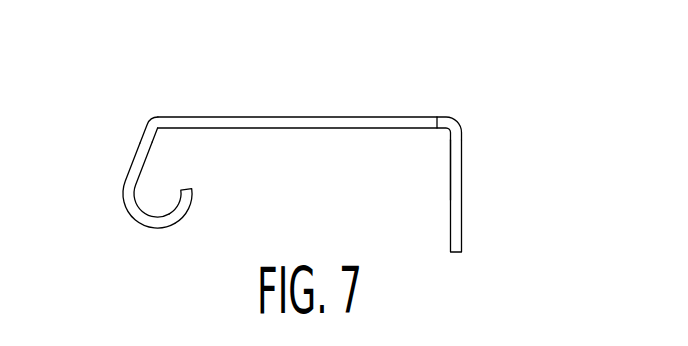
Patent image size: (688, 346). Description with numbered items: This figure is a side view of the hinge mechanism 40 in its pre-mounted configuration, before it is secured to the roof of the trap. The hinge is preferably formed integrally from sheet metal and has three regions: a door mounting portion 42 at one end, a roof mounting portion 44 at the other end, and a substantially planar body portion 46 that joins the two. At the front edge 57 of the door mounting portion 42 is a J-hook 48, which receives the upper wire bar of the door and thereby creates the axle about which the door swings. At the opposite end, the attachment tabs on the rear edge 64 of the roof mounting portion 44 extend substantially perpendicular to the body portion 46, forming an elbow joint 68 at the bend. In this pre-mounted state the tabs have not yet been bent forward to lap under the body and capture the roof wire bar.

The hinge mechanism 40 is at (289, 132).
The door mounting portion 42 is at (108, 184).
The roof mounting portion 44 is at (471, 158).
The body portion 46 is at (309, 115).
The J-hook 48 is at (195, 197).
The front edge 57 is at (148, 122).
The rear edge 64 is at (457, 127).
The elbow joint 68 is at (456, 145).